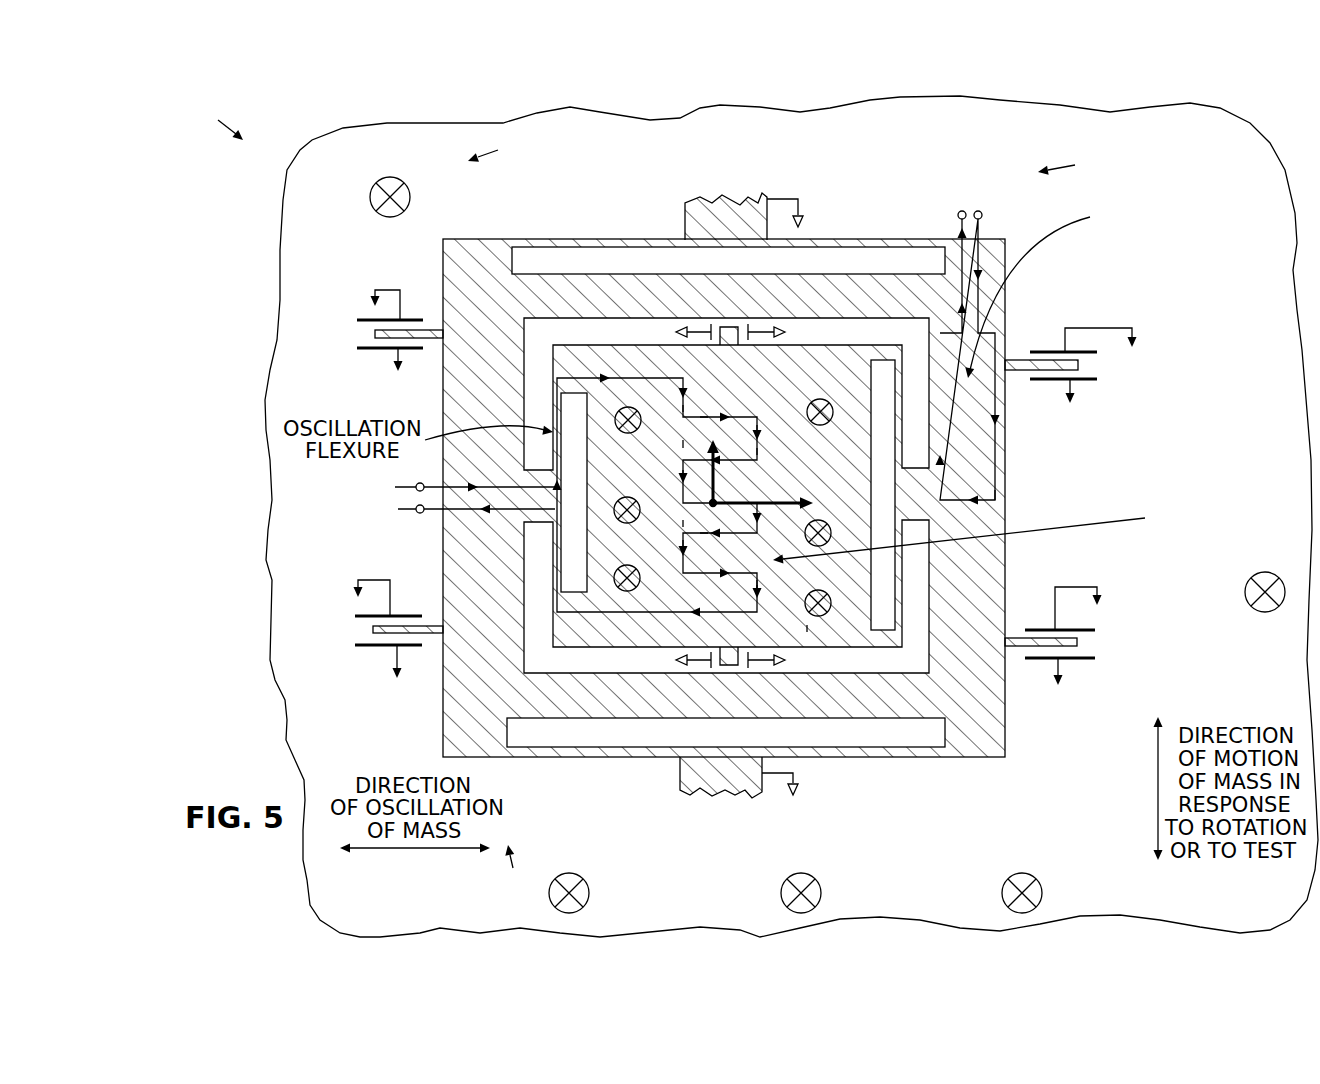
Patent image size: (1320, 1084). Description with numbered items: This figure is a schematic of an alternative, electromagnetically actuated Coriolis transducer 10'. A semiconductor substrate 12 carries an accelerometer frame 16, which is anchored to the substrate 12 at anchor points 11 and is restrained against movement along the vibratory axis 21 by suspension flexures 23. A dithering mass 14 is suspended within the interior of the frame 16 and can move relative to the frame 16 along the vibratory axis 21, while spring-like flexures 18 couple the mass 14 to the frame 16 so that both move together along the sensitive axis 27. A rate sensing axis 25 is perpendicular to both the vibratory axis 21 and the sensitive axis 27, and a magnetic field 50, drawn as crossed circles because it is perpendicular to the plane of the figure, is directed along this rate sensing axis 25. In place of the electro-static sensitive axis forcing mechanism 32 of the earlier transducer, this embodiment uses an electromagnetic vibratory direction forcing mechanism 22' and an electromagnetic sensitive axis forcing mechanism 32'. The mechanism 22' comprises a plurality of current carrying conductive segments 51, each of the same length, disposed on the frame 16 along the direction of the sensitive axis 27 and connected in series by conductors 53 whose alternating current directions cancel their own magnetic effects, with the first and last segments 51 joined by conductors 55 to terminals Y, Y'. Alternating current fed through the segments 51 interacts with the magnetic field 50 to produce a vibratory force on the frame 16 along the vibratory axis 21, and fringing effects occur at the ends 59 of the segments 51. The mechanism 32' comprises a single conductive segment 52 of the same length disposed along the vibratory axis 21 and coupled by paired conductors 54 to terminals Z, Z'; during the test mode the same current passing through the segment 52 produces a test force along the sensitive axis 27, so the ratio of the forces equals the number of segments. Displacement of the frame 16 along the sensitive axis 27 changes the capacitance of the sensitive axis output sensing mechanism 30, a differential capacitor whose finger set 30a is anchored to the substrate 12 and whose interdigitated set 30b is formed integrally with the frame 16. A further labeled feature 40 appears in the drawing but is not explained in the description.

The electromagnetically actuated Coriolis transducer 10' is at (214, 119).
The anchor points 11 is at (283, 237).
The semiconductor substrate 12 is at (918, 150).
The dithering mass 14 is at (808, 632).
The accelerometer frame 16 is at (405, 745).
The suspension flexures 18 is at (573, 393).
The vibratory axis 21 is at (795, 505).
The electromagnetic vibratory direction forcing mechanism 22' is at (1041, 519).
The suspension flexures 23 is at (571, 247).
The rate sensing axis 25 is at (678, 541).
The sensitive axis 27 is at (725, 480).
The sensitive axis output sensing mechanism 30 is at (330, 350).
The anchored output finger set 30a is at (372, 320).
The interdigitated output finger set 30b is at (375, 333).
The electro-static sensitive axis forcing mechanism 32 is at (787, 514).
The electromagnetic sensitive axis forcing mechanism 32' is at (1121, 262).
The flexure anchor 40 is at (735, 322).
The magnetic field 50 is at (370, 197).
The current carrying conductive segments 51 is at (690, 408).
The current carrying conductive segment 52 is at (998, 503).
The series conductors 53 is at (748, 417).
The paired connecting conductors 54 is at (997, 408).
The terminal conductors 55 is at (656, 378).
The segment ends 59 is at (770, 432).
The terminal Z is at (996, 199).
The terminal Z' is at (968, 192).
The terminal Y is at (462, 487).
The terminal Y' is at (459, 509).